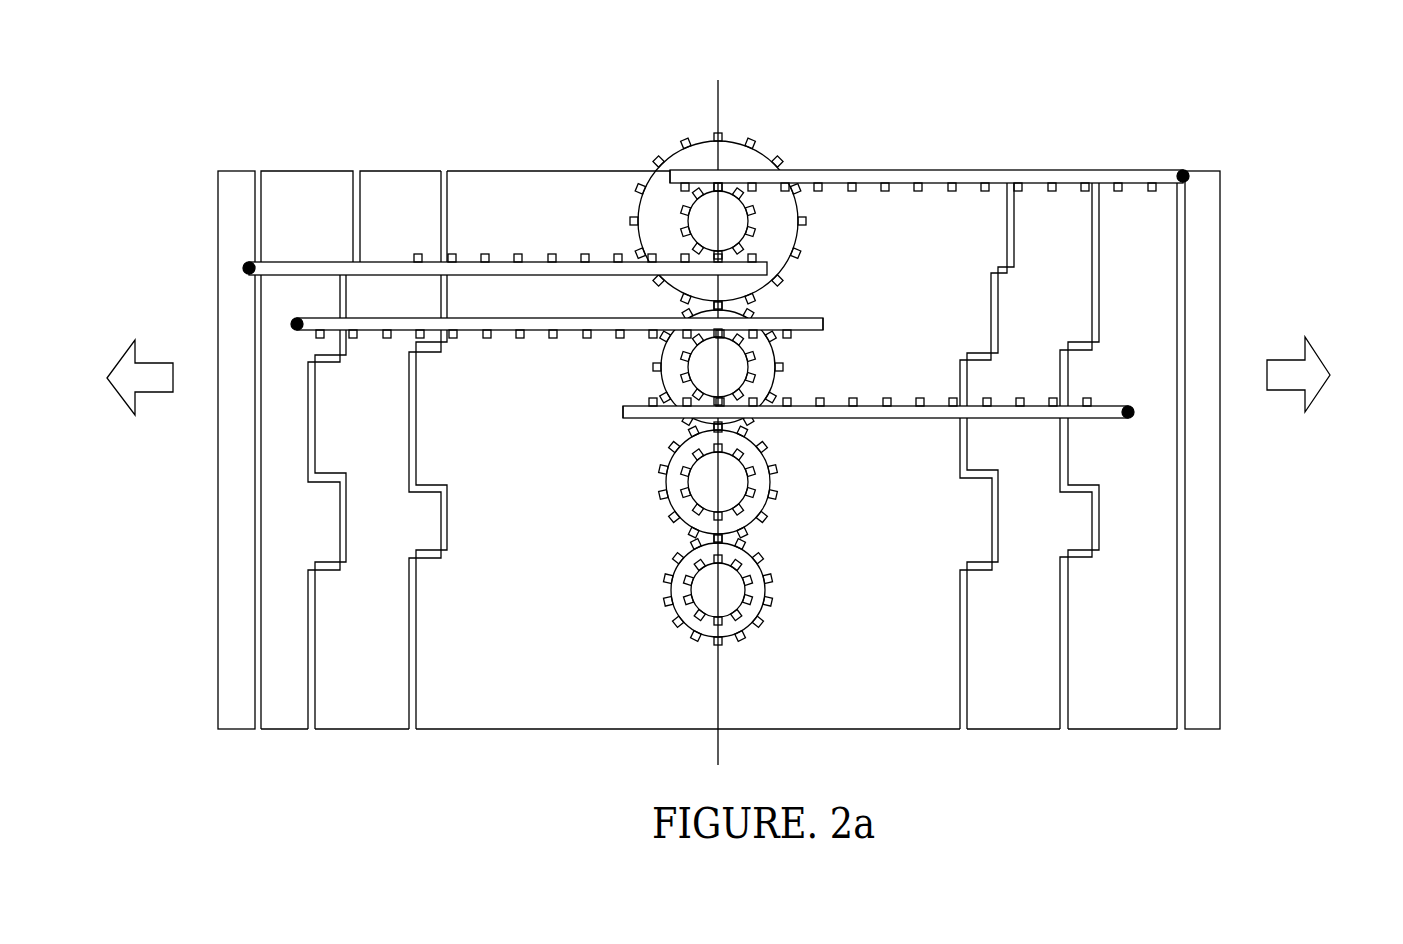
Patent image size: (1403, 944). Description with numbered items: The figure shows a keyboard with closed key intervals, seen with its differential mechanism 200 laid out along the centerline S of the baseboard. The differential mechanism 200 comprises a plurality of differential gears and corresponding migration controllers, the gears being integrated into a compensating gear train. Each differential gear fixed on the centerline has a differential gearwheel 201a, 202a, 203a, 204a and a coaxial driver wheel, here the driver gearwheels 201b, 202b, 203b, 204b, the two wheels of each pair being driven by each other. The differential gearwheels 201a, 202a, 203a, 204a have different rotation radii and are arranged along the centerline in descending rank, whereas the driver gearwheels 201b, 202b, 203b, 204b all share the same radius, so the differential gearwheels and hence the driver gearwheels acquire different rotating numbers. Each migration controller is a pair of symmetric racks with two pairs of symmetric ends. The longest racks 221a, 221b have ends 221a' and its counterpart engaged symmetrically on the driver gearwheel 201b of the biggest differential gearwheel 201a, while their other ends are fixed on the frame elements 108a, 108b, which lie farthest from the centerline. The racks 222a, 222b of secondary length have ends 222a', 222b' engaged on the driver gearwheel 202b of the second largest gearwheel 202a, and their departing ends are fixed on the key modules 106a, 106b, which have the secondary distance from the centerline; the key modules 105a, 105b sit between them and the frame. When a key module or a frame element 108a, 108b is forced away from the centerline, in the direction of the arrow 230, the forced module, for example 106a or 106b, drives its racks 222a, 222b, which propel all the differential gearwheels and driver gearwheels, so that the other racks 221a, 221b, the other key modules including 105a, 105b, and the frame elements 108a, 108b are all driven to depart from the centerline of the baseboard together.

The differential mechanism 200 is at (750, 95).
The differential gearwheel 201a is at (773, 150).
The driver gearwheel 201b is at (703, 227).
The differential gearwheel 202a is at (778, 388).
The driver gearwheel 202b is at (705, 368).
The differential gearwheel 203a is at (775, 500).
The driver gearwheel 203b is at (697, 497).
The differential gearwheel 204a is at (767, 605).
The driver gearwheel 204b is at (700, 590).
The rack 221a is at (926, 161).
The symmetric end of rack 221a' is at (623, 135).
The rack 221b is at (503, 268).
The rack 222a is at (560, 372).
The symmetric end of rack 222a' is at (862, 305).
The rack 222b is at (875, 440).
The symmetric end of rack 222b' is at (580, 438).
The arrow 230 is at (118, 363).
The frame element 108a is at (1215, 620).
The frame element 108b is at (233, 622).
The key module 105a is at (1025, 712).
The key module 105b is at (373, 712).
The key module 106a is at (1123, 712).
The key module 106b is at (283, 712).